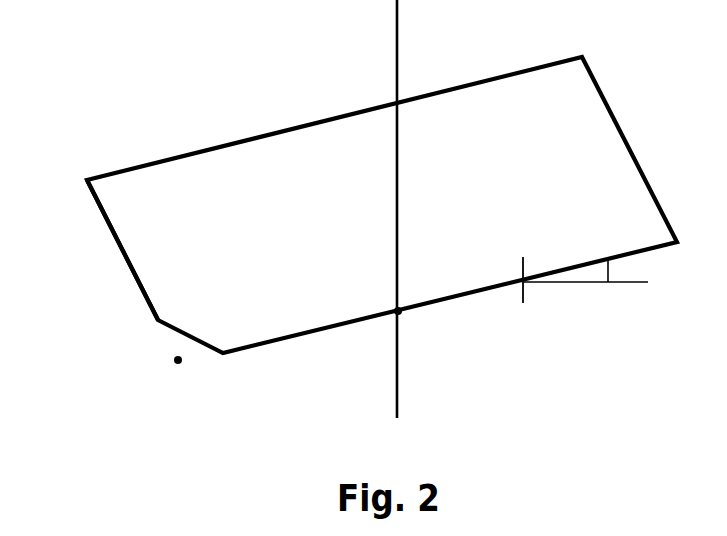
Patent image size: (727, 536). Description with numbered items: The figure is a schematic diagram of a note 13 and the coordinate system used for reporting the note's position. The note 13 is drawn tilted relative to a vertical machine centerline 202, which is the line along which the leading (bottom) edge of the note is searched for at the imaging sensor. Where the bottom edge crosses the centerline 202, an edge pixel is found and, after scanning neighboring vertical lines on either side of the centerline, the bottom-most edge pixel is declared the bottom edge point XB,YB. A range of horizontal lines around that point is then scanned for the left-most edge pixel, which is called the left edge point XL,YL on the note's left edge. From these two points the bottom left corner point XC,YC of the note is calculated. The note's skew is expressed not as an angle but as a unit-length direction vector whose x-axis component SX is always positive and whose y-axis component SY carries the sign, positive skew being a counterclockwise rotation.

The note 13 is at (299, 127).
The machine centerline 202 is at (397, 68).
The bottom edge point XB,YB is at (448, 322).
The left edge point XL,YL is at (142, 291).
The bottom left corner point XC,YC is at (175, 361).
The x-axis component of skew direction vector SX is at (585, 284).
The y-axis component of skew direction vector SY is at (632, 269).